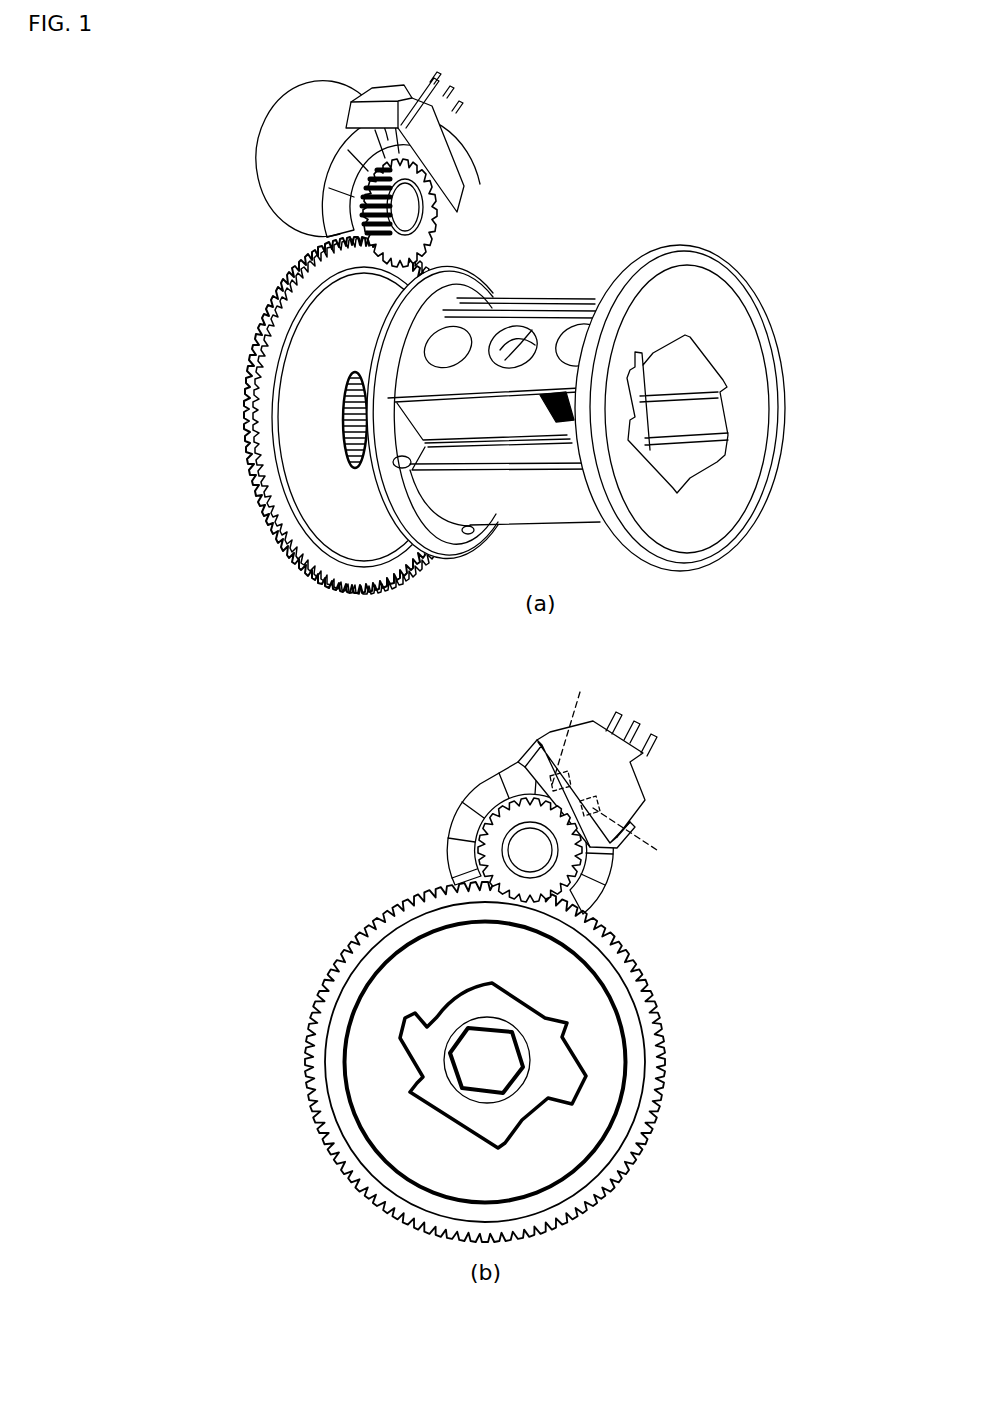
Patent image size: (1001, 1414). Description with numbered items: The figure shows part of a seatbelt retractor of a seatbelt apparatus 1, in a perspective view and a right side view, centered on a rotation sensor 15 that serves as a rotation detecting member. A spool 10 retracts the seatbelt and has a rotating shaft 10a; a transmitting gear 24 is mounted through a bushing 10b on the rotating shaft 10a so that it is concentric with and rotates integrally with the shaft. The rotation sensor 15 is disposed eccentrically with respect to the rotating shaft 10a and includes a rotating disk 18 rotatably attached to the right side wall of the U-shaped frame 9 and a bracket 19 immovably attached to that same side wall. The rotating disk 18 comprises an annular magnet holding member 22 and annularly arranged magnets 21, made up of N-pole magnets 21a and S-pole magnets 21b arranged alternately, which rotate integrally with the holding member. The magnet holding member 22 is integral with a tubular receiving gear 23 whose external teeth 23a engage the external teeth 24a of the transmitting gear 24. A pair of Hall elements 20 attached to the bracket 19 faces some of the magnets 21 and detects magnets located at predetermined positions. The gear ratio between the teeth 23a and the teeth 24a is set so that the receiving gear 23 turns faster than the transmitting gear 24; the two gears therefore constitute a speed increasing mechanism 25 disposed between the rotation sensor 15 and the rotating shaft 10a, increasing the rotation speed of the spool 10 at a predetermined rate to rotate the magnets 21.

The seatbelt apparatus 1 is at (735, 123).
The U-shaped frame 9 is at (458, 117).
The spool 10 is at (564, 298).
The rotating shaft 10a is at (477, 1040).
The bushing 10b is at (418, 1033).
The rotation sensor 15 is at (551, 115).
The rotating disk 18 is at (247, 185).
The bracket 19 is at (630, 762).
The pair of Hall elements 20 is at (615, 767).
The annularly arranged magnets 21 is at (243, 80).
The N-pole magnets 21a is at (347, 128).
The S-pole magnets 21b is at (350, 148).
The annular magnet holding member 22 is at (352, 160).
The receiving gear 23 is at (443, 194).
The external teeth 23a is at (443, 237).
The transmitting gear 24 is at (327, 533).
The external teeth 24a is at (256, 528).
The speed increasing mechanism 25 is at (654, 926).